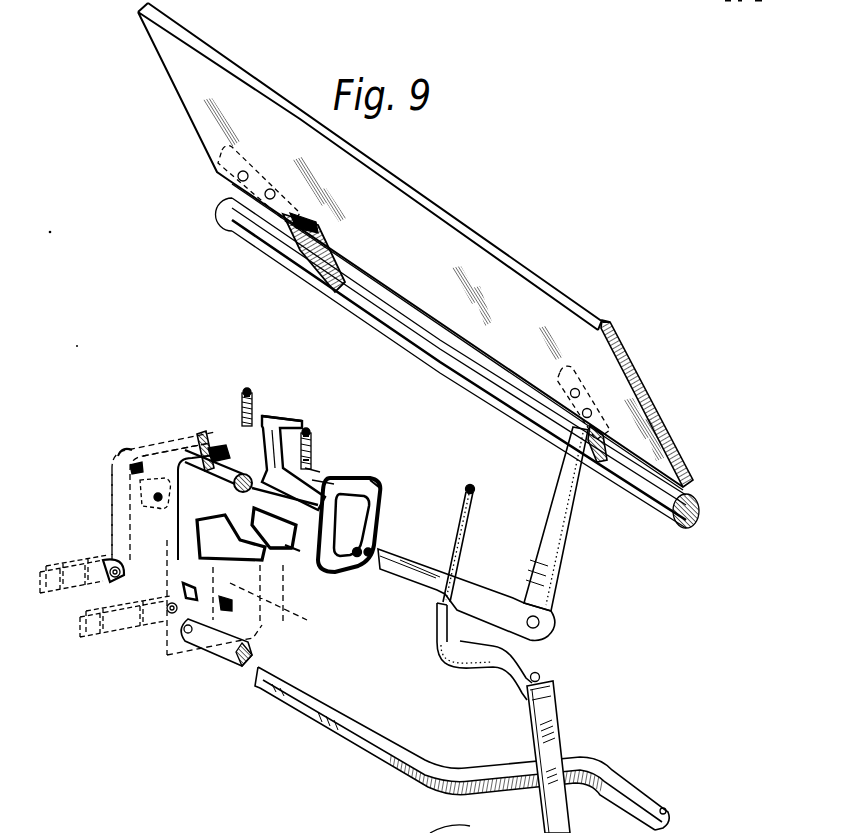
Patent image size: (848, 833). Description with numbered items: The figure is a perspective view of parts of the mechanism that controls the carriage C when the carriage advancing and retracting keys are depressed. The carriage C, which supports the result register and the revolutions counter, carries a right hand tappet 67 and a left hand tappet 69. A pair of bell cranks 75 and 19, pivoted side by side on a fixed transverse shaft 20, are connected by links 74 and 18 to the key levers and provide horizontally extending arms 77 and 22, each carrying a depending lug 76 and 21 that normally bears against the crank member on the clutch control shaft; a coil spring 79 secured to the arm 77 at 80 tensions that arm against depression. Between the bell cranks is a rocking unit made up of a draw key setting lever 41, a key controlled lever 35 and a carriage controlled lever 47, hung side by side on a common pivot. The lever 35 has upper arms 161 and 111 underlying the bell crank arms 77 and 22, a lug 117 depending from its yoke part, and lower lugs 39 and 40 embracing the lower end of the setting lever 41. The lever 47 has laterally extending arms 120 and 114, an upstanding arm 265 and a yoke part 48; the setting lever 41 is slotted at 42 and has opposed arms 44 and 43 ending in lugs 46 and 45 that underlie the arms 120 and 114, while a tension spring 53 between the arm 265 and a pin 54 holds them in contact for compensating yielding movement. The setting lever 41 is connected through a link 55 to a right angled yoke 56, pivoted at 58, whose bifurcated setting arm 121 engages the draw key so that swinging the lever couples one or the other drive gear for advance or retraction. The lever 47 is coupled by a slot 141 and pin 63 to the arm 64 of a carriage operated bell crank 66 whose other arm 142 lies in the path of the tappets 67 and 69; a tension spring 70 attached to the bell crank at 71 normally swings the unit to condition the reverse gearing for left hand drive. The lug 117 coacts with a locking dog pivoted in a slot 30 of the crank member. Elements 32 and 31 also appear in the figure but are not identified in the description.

The carriage C is at (427, 232).
The right hand tappet 67 is at (595, 420).
The left hand tappet 69 is at (312, 272).
The arm of carriage operated bell crank 142 is at (583, 425).
The tension spring 70 is at (468, 523).
The arm of carriage operated bell crank 64 is at (462, 594).
The carriage operated bell crank 66 is at (488, 613).
The pivot point 58 is at (540, 676).
The right angled yoke 56 is at (548, 712).
The horizontal bifurcated setting arm 121 is at (477, 657).
The spring connection point 71 is at (442, 603).
The link 55 is at (353, 740).
The pin 54 is at (296, 612).
The laterally extending arm 43 is at (293, 538).
The lug 45 is at (300, 550).
The lower laterally extending lug 39 is at (227, 605).
The draw key setting lever 41 is at (193, 632).
The lug 117 is at (220, 610).
The link 18 is at (90, 628).
The link 74 is at (48, 597).
The bell crank 19 is at (182, 578).
The lower laterally extending lug 40 is at (182, 573).
The bell crank 75 is at (120, 520).
The depending lug 76 is at (155, 497).
The laterally extending arm 44 is at (213, 485).
The transverse shaft 20 is at (120, 453).
The bell crank arm 77 is at (158, 460).
The lug 46 is at (205, 485).
The laterally extending arm 120 is at (205, 440).
The upper laterally extending arm 161 is at (222, 447).
The spring attachment point 80 is at (244, 420).
The coil spring 79 is at (247, 390).
The upstanding arm 265 is at (268, 417).
The slot 42 is at (290, 417).
The tension spring 53 is at (302, 418).
The pin 32 is at (320, 442).
The bell crank arm 22 is at (320, 450).
The spring 31 is at (323, 460).
The laterally extending arm 114 is at (318, 467).
The upper laterally extending arm 111 is at (333, 478).
The carriage controlled lever 47 is at (380, 484).
The key controlled lever 35 is at (380, 507).
The yoke part 48 is at (370, 527).
The pin 63 is at (387, 550).
The slot 141 is at (425, 562).
The depending lug 21 is at (203, 532).
The slot 30 is at (205, 537).